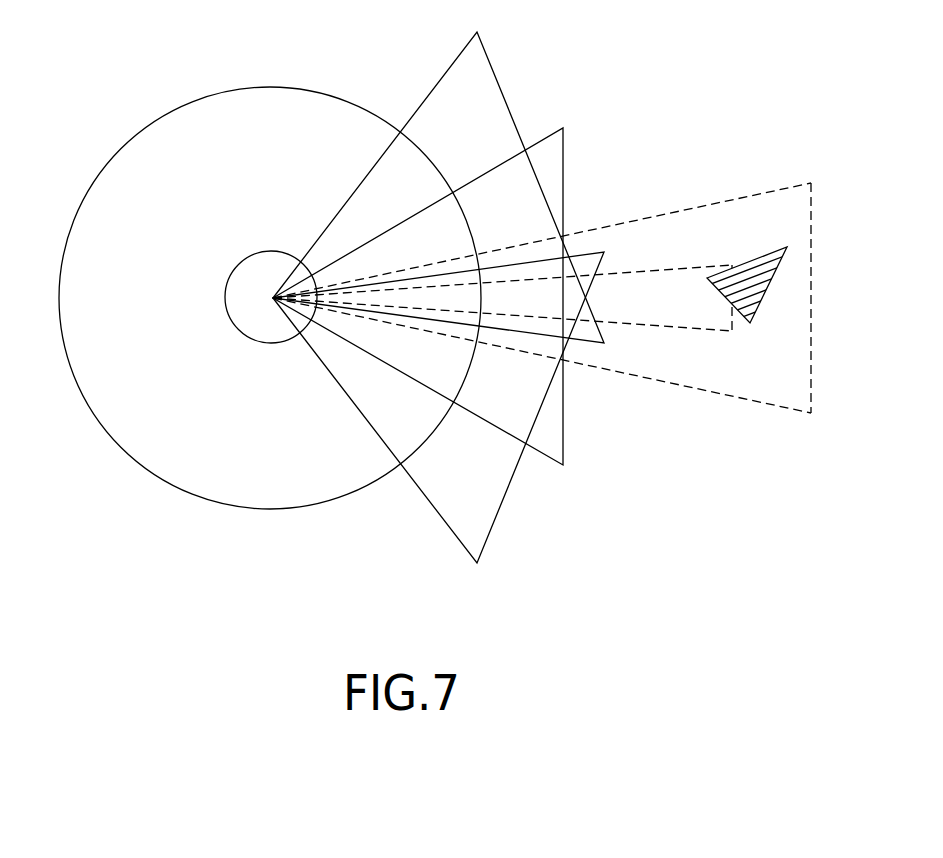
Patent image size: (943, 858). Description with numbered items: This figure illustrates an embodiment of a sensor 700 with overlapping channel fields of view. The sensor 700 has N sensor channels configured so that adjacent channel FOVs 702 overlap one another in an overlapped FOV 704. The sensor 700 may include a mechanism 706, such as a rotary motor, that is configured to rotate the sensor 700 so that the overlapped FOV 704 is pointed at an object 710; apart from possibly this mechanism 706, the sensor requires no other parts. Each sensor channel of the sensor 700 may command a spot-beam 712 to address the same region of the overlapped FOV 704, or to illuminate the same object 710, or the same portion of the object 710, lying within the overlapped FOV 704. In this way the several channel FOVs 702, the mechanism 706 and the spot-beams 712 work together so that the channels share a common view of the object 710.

The sensor 700 is at (145, 127).
The channel FOV 702 is at (504, 96).
The overlapped FOV 704 is at (778, 188).
The mechanism 706 is at (226, 312).
The object 710 is at (762, 258).
The spot-beam 712 is at (702, 332).